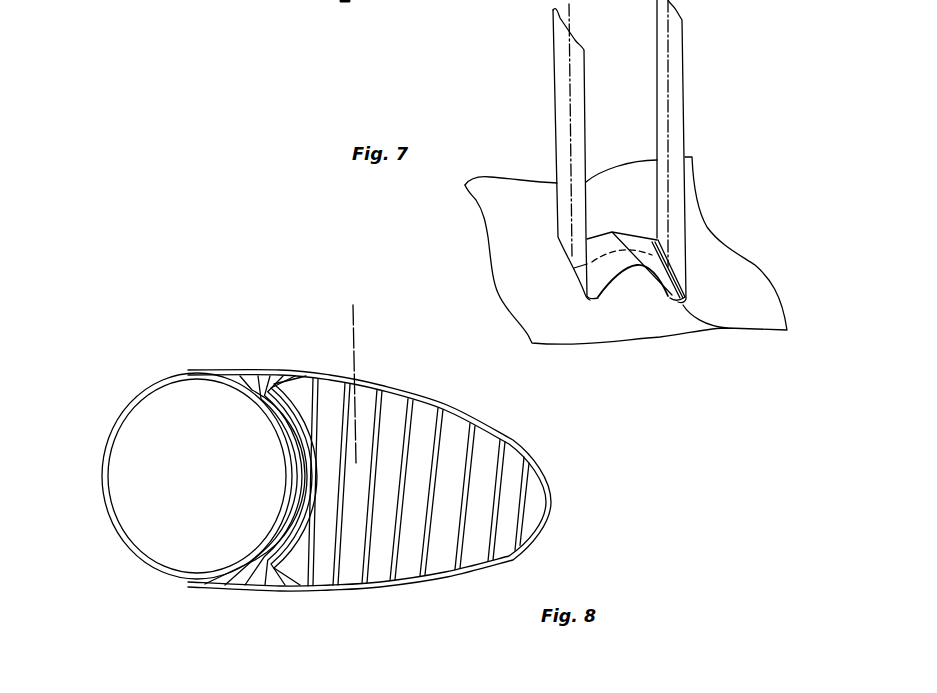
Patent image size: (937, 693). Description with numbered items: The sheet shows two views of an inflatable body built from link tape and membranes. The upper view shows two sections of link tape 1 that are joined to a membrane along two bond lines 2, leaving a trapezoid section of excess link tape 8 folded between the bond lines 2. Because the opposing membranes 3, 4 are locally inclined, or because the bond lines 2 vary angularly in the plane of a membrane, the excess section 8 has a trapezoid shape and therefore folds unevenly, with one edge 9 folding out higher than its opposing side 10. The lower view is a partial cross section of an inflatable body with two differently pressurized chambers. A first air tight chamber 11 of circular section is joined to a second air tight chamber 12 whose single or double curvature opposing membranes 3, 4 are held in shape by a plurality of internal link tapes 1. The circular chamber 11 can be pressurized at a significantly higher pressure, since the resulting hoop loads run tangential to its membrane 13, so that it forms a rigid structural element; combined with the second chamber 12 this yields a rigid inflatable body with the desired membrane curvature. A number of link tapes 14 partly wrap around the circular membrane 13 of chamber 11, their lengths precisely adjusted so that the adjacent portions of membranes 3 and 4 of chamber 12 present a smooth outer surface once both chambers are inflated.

In FIG. 7, the link tape 1 is at (567, 107).
In FIG. 8, the link tape 1 is at (403, 447).
In FIG. 7, the bond line 2 is at (722, 328).
In FIG. 7, the membrane 3 is at (755, 292).
In FIG. 8, the membrane 3 is at (396, 386).
In FIG. 7, the membrane 4 is at (705, 316).
In FIG. 8, the membrane 4 is at (405, 590).
In FIG. 7, the section of excess link tape 8 is at (616, 260).
In FIG. 7, the edge 9 is at (650, 276).
In FIG. 7, the opposing side 10 is at (633, 228).
In FIG. 8, the first air tight chamber 11 is at (187, 438).
In FIG. 8, the second air tight chamber 12 is at (358, 371).
In FIG. 8, the membrane 13 is at (133, 552).
In FIG. 8, the link tapes 14 is at (300, 400).